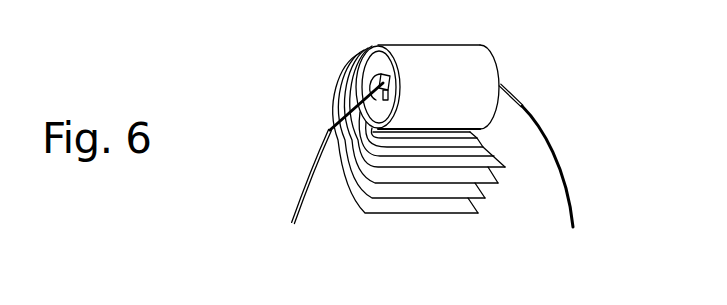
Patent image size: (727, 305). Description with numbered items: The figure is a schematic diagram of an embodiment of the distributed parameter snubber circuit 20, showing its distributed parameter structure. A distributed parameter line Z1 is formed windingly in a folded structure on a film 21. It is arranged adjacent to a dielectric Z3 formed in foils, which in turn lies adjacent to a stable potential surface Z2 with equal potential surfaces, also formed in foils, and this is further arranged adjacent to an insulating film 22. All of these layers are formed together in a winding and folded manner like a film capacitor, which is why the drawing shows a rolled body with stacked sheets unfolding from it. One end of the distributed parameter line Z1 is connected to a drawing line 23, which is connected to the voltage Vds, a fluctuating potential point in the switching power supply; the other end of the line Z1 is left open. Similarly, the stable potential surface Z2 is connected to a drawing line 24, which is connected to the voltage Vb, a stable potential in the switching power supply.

The distributed parameter snubber circuit 20 is at (592, 54).
The film 21 is at (503, 167).
The insulating film 22 is at (355, 196).
The drawing line 23 is at (297, 163).
The drawing line 24 is at (562, 173).
The distributed parameter line Z1 is at (490, 147).
The stable potential surface Z2 is at (488, 216).
The dielectric Z3 is at (357, 157).